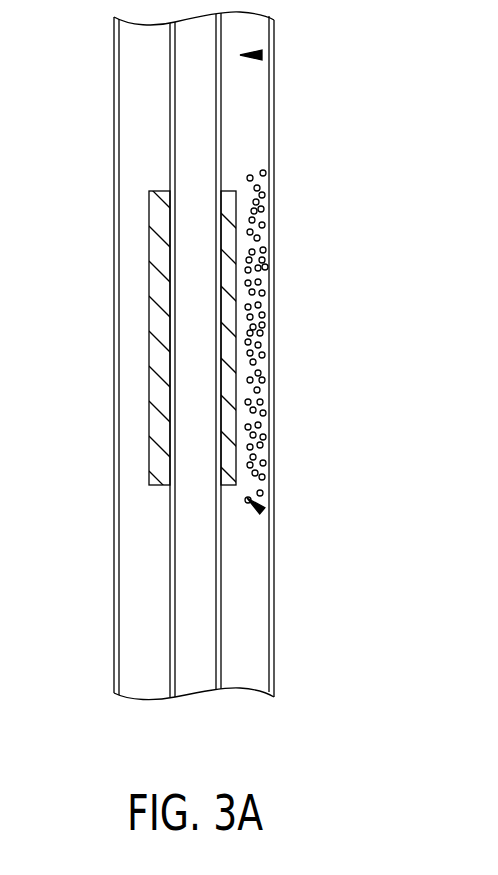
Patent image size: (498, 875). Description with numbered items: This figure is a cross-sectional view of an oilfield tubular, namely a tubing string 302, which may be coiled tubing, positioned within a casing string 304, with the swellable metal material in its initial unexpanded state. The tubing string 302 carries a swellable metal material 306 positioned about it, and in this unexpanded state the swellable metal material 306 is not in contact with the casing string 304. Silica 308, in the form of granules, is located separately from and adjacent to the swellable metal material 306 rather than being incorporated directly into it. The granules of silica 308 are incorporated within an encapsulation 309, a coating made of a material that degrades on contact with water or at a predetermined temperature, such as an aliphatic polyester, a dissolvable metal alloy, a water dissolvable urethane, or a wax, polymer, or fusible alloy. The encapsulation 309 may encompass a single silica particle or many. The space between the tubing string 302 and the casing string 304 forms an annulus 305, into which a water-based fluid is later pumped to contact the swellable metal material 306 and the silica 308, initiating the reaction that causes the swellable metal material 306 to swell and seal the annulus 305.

The tubing string 302 is at (217, 128).
The casing string 304 is at (274, 106).
The annulus 305 is at (262, 55).
The swellable metal material 306 is at (149, 322).
The silica 308 is at (263, 273).
The encapsulation 309 is at (263, 511).